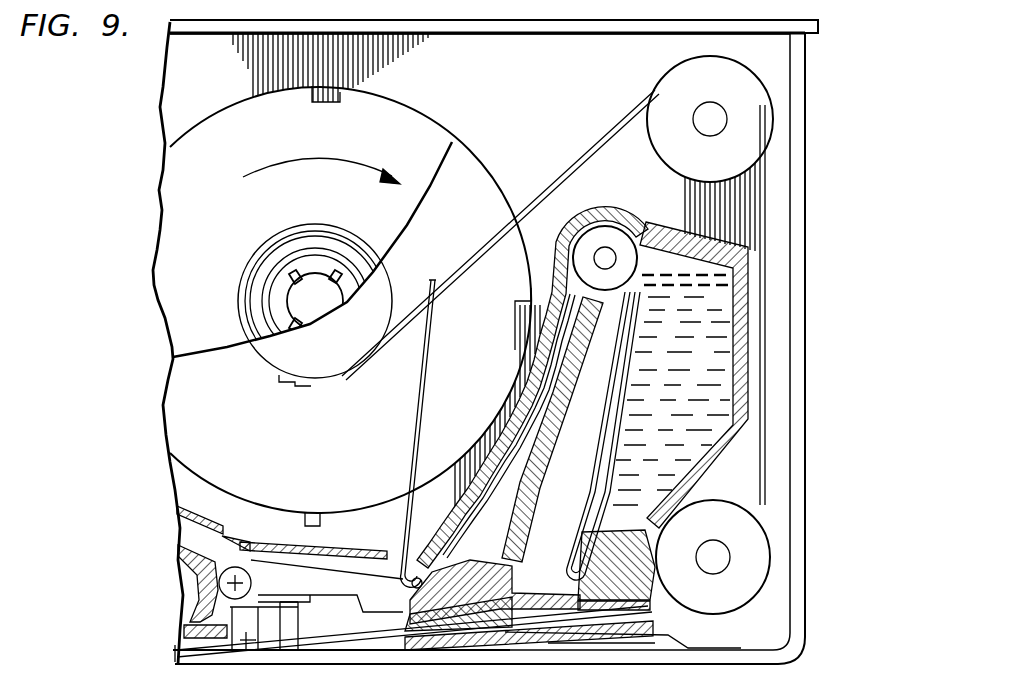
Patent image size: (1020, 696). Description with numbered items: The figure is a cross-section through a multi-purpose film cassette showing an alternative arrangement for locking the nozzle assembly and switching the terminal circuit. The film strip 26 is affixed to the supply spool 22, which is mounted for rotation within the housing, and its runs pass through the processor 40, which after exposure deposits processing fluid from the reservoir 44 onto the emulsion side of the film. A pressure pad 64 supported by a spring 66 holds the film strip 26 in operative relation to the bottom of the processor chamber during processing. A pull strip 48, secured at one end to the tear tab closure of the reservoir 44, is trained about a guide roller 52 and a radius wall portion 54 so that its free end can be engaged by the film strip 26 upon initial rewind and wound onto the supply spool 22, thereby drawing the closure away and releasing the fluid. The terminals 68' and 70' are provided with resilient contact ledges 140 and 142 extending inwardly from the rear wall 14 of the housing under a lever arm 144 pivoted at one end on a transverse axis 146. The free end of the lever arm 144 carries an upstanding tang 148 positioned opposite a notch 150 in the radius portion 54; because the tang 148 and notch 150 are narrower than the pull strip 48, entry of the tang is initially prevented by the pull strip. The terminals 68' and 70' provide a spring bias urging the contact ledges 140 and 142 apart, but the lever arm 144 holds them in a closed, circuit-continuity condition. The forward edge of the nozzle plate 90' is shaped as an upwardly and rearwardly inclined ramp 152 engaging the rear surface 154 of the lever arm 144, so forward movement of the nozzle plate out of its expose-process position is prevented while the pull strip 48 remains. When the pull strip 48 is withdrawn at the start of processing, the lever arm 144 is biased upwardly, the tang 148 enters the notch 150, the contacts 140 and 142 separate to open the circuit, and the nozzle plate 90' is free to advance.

The back wall 14 is at (513, 80).
The supply spool 22 is at (478, 180).
The film strip 26 is at (596, 143).
The processor 40 is at (702, 232).
The reservoir 44 is at (740, 343).
The pull strip 48 is at (427, 428).
The guide roller 52 is at (612, 236).
The radius wall portion 54 is at (431, 535).
The pressure pad 64 is at (521, 638).
The spring 66 is at (633, 648).
The terminal 68' is at (263, 668).
The terminal 70' is at (288, 626).
The nozzle plate 90' is at (591, 451).
The contact ledge 140 is at (247, 632).
The contact ledge 142 is at (298, 593).
The lever arm 144 is at (268, 564).
The transverse axis 146 is at (237, 567).
The tang 148 is at (403, 570).
The notch 150 is at (440, 568).
The ramp 152 is at (383, 628).
The rear surface 154 is at (378, 551).